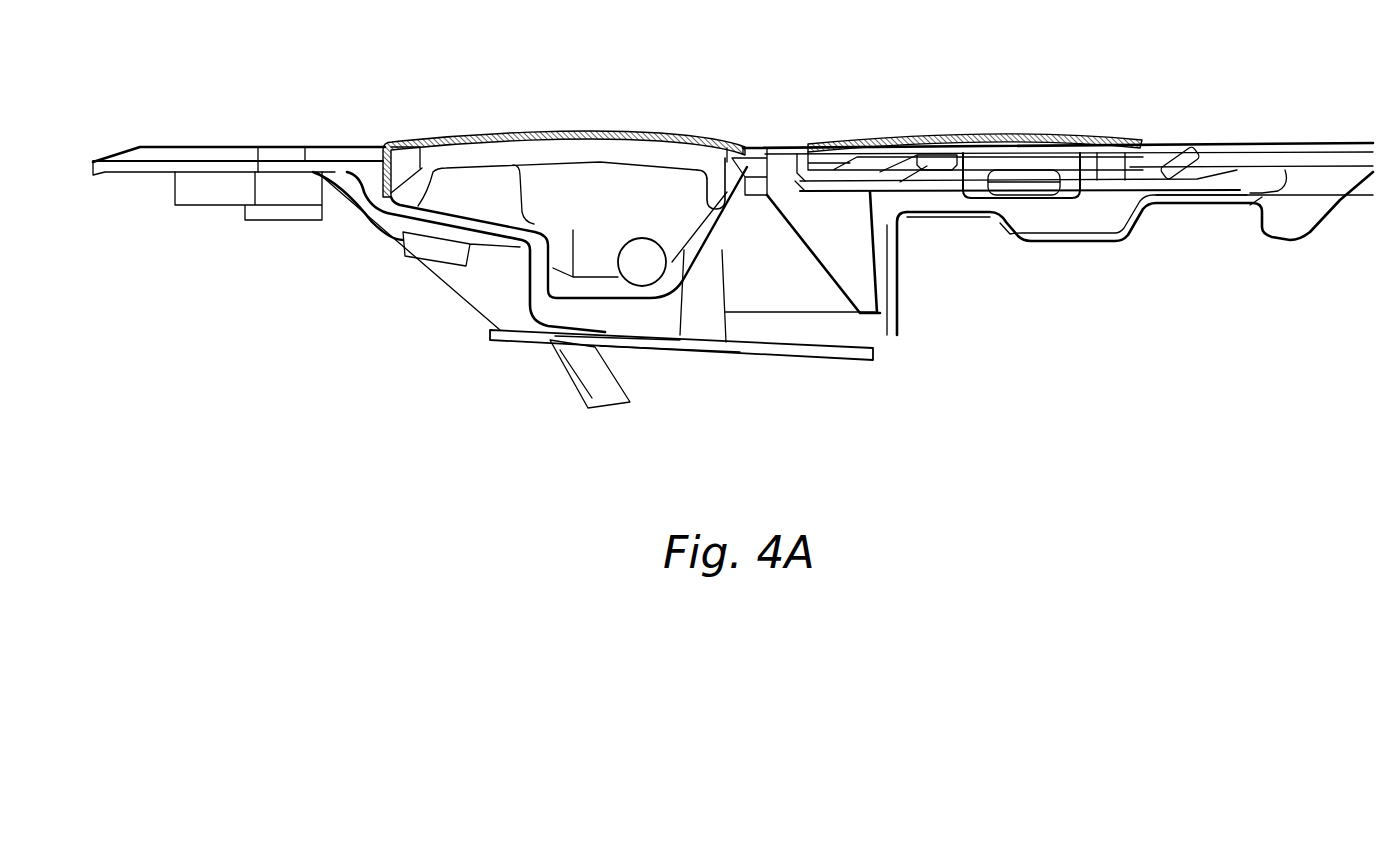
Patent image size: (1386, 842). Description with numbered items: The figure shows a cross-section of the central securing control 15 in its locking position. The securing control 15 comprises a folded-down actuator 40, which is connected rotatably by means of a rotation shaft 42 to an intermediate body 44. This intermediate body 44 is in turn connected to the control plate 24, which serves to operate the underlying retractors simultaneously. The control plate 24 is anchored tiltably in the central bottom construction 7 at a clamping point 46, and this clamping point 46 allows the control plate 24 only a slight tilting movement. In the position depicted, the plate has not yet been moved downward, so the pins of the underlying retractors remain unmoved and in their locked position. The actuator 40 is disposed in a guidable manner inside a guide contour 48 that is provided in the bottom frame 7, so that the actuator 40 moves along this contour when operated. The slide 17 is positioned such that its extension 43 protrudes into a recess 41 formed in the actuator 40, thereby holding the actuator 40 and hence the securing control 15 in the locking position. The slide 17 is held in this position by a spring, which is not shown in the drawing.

The central securing control 15 is at (448, 104).
The actuator 40 is at (600, 156).
The extension 43 is at (757, 167).
The recess 41 is at (716, 168).
The rotation shaft 42 is at (640, 258).
The guide contour 48 is at (540, 292).
The intermediate body 44 is at (658, 320).
The control plate 24 is at (903, 290).
The slide 17 is at (983, 118).
The central bottom construction 7 is at (1130, 270).
The clamping point 46 is at (1268, 178).